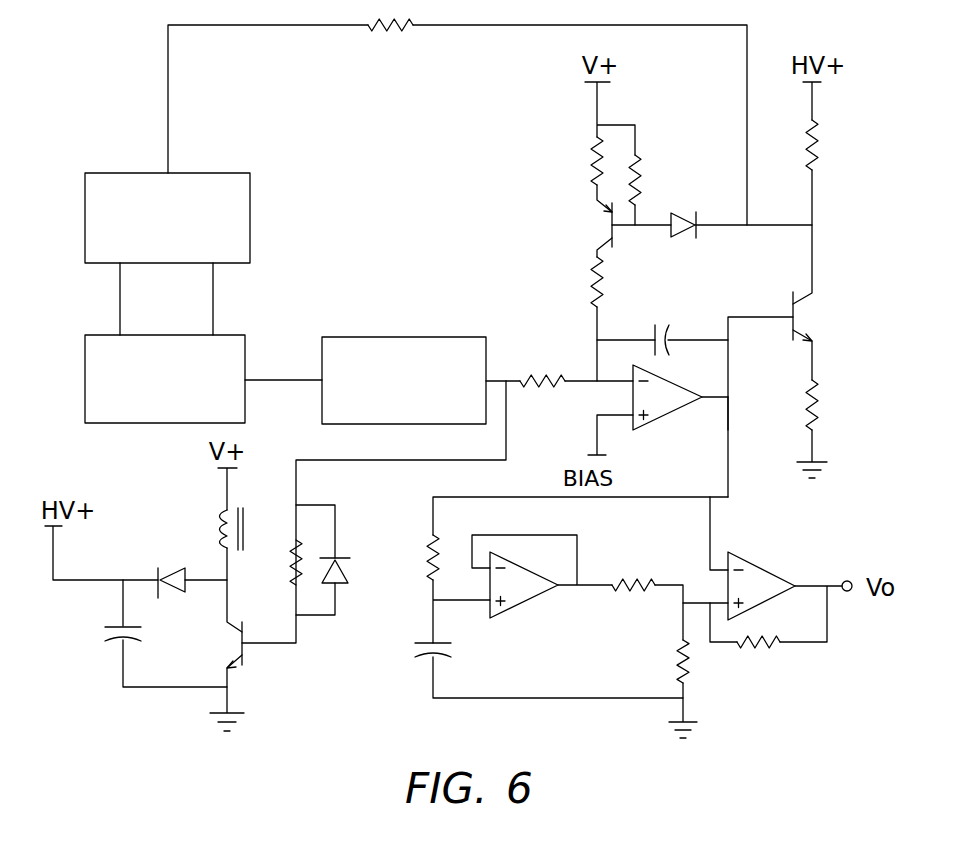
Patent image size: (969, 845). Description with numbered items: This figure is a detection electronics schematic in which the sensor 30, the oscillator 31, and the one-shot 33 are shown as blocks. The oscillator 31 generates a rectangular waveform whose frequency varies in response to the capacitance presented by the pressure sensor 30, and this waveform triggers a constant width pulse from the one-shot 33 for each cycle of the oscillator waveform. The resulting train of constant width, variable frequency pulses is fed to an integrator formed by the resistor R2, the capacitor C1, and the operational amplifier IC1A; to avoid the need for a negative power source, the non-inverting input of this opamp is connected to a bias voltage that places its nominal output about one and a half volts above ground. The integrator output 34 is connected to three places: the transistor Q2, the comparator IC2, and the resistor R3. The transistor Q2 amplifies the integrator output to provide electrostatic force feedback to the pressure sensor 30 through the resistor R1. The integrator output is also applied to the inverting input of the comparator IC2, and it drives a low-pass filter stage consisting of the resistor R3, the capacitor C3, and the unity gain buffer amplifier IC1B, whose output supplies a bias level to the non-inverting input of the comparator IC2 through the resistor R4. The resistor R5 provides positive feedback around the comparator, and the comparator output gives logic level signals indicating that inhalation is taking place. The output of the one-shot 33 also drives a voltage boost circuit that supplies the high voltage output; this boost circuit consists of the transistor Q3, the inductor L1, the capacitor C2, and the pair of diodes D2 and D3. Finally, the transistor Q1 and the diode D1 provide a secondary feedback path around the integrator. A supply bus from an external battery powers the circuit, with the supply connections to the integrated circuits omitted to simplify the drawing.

The sensor 30 is at (252, 218).
The oscillator 31 is at (83, 380).
The one-shot 33 is at (366, 337).
The integrator output 34 is at (730, 430).
The resistor R1 is at (400, 27).
The resistor R2 is at (530, 381).
The resistor R3 is at (430, 548).
The resistor R4 is at (637, 583).
The resistor R5 is at (755, 647).
The capacitor C1 is at (668, 348).
The capacitor C2 is at (118, 623).
The capacitor C3 is at (455, 650).
The diode D1 is at (690, 232).
The diode D2 is at (345, 570).
The diode D3 is at (165, 570).
The transistor Q1 is at (600, 220).
The transistor Q2 is at (785, 303).
The transistor Q3 is at (250, 660).
The inductor L1 is at (215, 528).
The operational amplifier IC1A is at (675, 410).
The unity gain buffer amplifier IC1B is at (525, 595).
The comparator IC2 is at (770, 575).